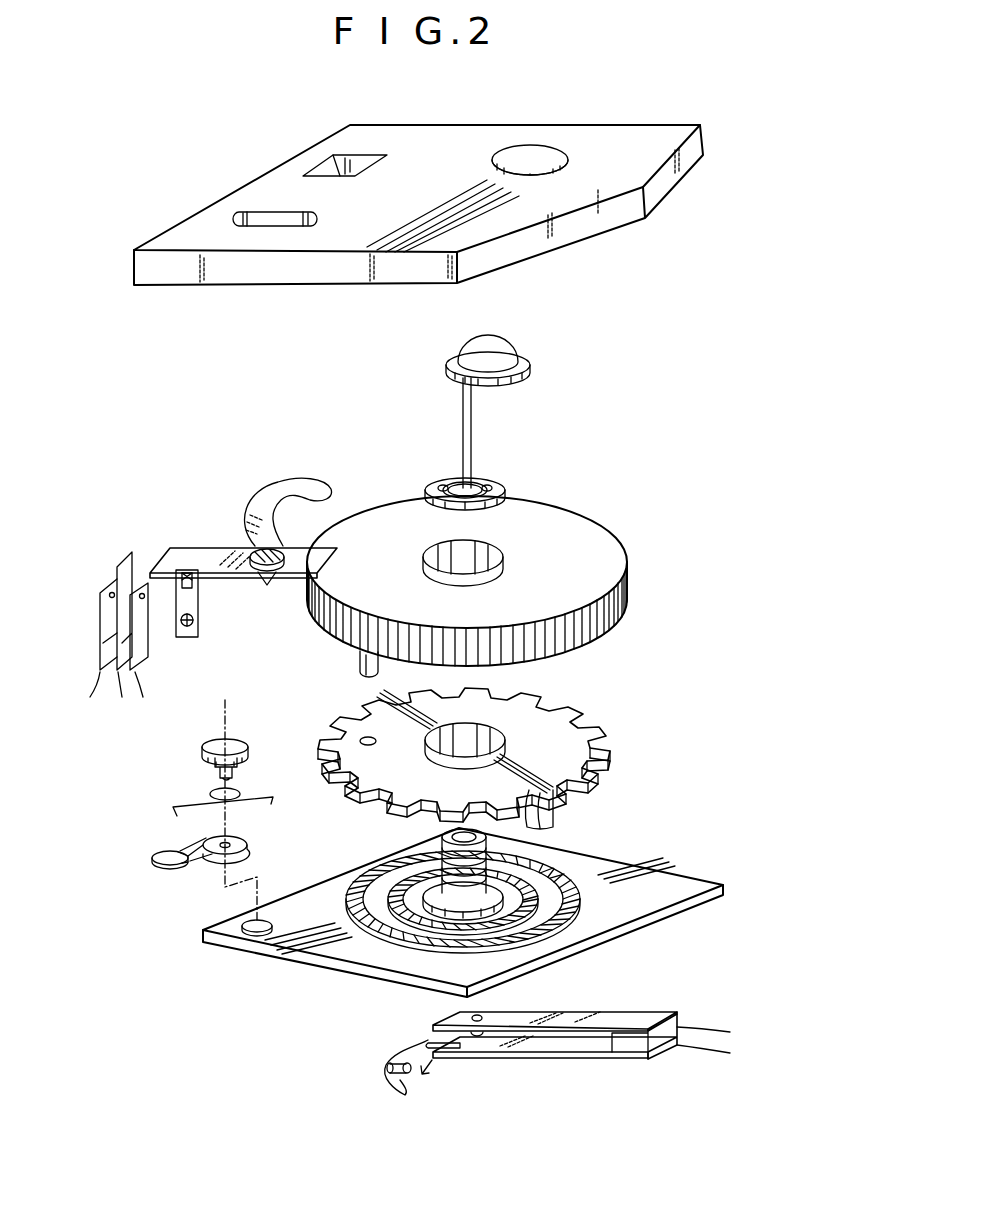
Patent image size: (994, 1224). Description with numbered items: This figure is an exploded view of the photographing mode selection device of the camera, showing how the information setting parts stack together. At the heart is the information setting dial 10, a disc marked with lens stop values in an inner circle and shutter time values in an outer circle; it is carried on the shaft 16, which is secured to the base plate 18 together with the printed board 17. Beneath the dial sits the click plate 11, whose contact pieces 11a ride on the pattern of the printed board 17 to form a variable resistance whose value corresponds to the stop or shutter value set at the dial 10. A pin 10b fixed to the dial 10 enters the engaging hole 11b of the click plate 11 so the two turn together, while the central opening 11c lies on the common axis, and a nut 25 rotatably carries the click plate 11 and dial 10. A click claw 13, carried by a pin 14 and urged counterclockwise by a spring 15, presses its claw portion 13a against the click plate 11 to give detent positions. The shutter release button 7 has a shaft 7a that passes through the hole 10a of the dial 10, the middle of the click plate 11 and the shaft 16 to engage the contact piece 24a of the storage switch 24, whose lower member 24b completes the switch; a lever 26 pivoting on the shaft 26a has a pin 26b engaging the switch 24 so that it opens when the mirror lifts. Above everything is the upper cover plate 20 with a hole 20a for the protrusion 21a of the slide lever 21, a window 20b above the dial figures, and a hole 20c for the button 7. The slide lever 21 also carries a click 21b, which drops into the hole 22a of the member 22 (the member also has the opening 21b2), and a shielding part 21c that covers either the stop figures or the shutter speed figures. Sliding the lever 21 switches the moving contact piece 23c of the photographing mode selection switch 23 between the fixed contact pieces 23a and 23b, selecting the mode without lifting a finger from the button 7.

The upper cover plate 20 is at (418, 212).
The hole 20a is at (300, 226).
The window 20b is at (331, 170).
The hole 20c is at (540, 162).
The shutter release button 7 is at (502, 407).
The shaft 7a is at (467, 437).
The nut 25 is at (500, 483).
The information setting dial 10 is at (489, 581).
The hole 10a is at (452, 566).
The pin 10b is at (363, 675).
The click plate 11 is at (478, 760).
The contact pieces 11a is at (553, 818).
The engaging hole 11b is at (365, 746).
The gear center hole 11c is at (473, 745).
The slide lever 21 is at (243, 547).
The protrusion 21a is at (275, 566).
The click 21b is at (266, 587).
The bracket opening 21b2 is at (192, 583).
The shielding part 21c is at (296, 487).
The member 22 is at (218, 624).
The hole 22a is at (193, 598).
The photographing mode selection switch 23 is at (109, 574).
The fixed contact piece 23a is at (140, 588).
The fixed contact piece 23b is at (106, 584).
The moving contact piece 23c is at (124, 560).
The pin 14 is at (240, 745).
The spring 15 is at (274, 802).
The click claw 13 is at (222, 875).
The claw portion 13a is at (175, 866).
The shaft 16 is at (438, 882).
The printed board 17 is at (405, 945).
The base plate 18 is at (335, 950).
The storage switch 24 is at (581, 1039).
The contact piece 24a is at (481, 1017).
The switch lower plate 24b is at (605, 1058).
The lever 26 is at (414, 1086).
The shaft 26a is at (408, 1077).
The pin 26b is at (428, 1041).